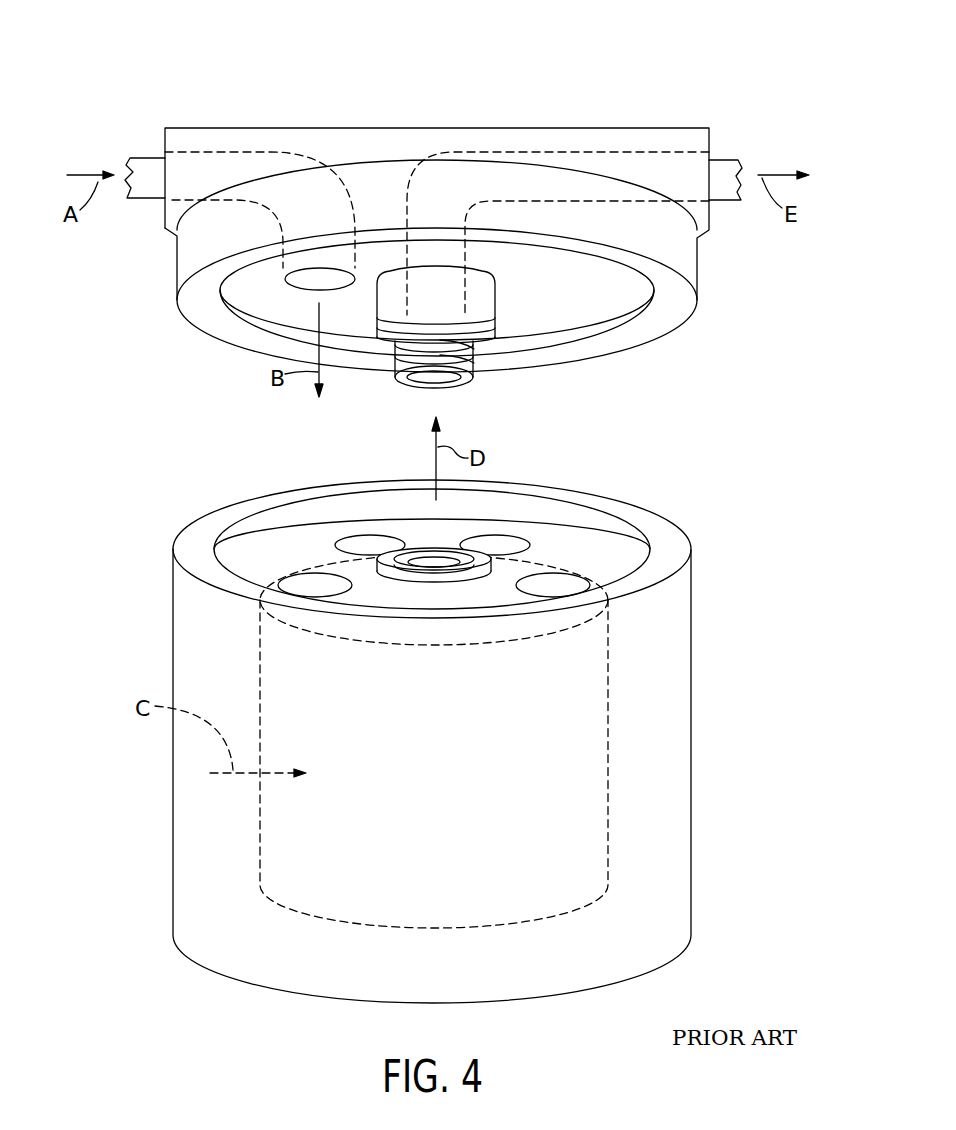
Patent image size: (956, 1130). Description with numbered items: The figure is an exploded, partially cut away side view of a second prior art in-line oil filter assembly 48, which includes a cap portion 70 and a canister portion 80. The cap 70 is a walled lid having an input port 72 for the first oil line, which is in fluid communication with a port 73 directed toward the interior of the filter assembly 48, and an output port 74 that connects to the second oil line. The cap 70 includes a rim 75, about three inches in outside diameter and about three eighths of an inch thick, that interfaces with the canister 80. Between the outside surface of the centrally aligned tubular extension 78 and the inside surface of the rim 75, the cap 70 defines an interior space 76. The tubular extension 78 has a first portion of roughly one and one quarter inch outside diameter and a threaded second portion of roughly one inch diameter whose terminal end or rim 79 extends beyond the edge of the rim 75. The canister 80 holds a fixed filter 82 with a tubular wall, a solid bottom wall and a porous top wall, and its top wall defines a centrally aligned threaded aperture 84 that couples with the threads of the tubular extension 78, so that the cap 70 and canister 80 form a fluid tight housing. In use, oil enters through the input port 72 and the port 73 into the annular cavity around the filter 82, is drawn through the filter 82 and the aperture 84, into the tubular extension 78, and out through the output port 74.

The oil filter assembly 48 is at (545, 58).
The cap portion 70 is at (410, 128).
The input port 72 is at (152, 158).
The port 73 is at (282, 278).
The output port 74 is at (711, 153).
The rim 75 is at (679, 308).
The interior space 76 is at (604, 297).
The tubular extension 78 is at (493, 345).
The terminal end or rim 79 is at (468, 383).
The canister portion 80 is at (680, 660).
The fixed filter 82 is at (262, 683).
The aperture 84 is at (420, 548).